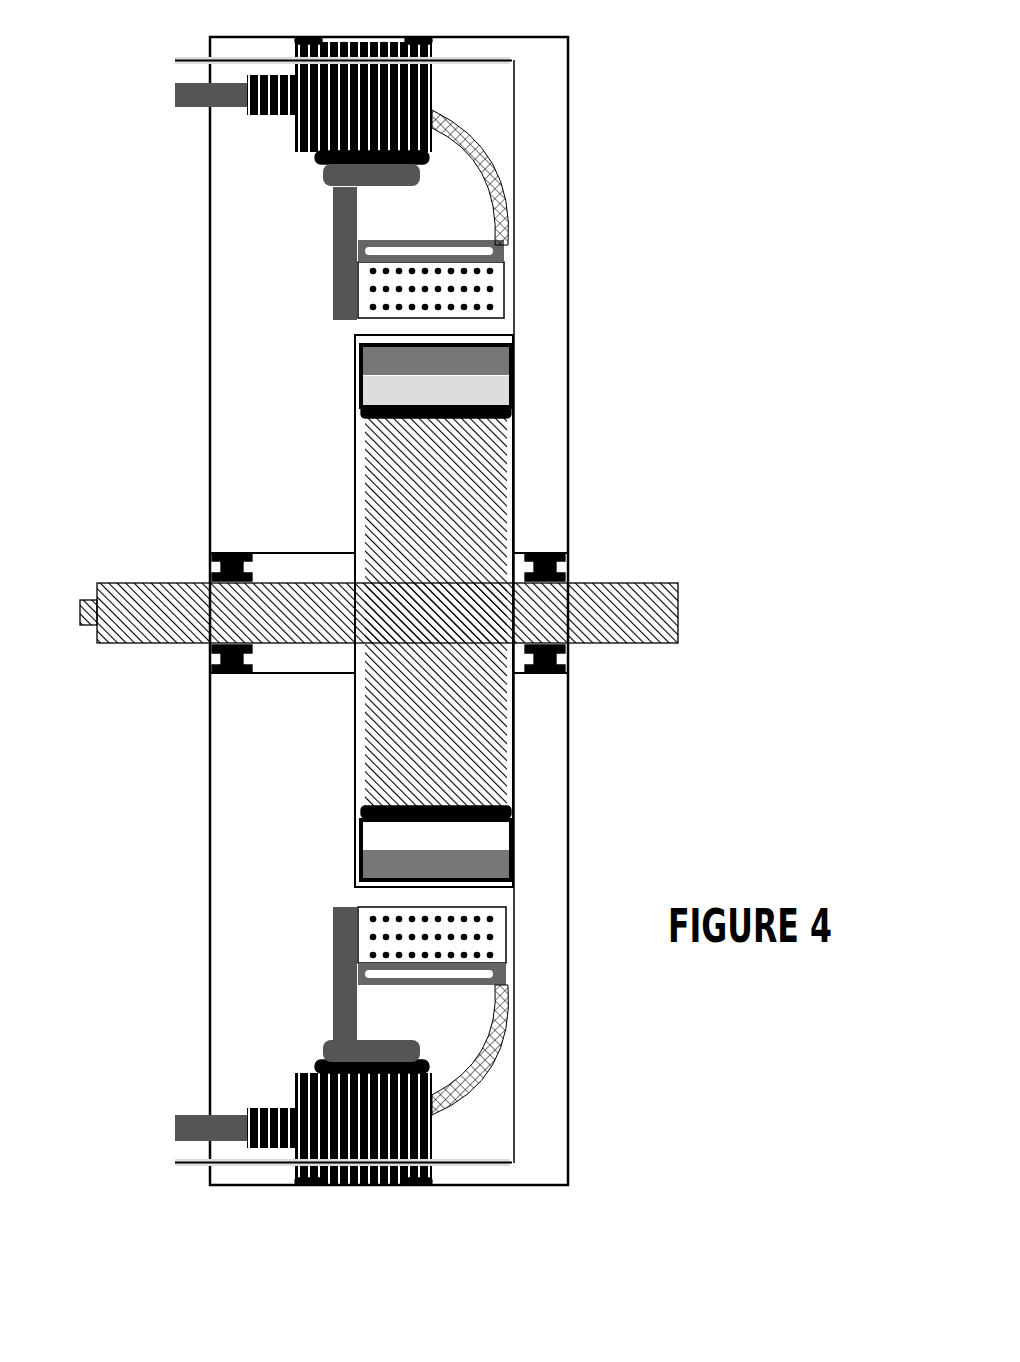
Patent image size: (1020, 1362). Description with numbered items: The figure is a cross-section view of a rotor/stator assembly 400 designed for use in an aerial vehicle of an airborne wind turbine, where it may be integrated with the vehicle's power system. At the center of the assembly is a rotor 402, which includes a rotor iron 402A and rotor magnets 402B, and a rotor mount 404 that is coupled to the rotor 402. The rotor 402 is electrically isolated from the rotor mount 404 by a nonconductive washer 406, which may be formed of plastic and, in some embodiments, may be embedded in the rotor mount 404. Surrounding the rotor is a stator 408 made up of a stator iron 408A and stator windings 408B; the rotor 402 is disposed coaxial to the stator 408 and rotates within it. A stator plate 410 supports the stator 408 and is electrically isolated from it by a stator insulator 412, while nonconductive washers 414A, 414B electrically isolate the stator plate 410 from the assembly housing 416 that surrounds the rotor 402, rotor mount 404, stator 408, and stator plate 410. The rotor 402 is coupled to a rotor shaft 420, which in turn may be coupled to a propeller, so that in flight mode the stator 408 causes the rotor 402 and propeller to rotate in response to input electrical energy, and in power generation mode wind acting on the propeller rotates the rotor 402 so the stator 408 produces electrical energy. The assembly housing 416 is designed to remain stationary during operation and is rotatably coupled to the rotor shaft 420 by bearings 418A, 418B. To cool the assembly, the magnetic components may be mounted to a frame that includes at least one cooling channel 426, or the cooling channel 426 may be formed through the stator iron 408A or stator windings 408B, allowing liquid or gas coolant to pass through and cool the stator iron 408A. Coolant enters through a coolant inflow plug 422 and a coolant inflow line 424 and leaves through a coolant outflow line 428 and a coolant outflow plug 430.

The rotor/stator assembly 400 is at (77, 216).
The rotor 402 is at (361, 366).
The rotor iron 402A is at (436, 390).
The rotor magnets 402B is at (436, 361).
The rotor mount 404 is at (365, 522).
The nonconductive washer 406 is at (361, 418).
The stator 408 is at (333, 298).
The stator iron 408A is at (333, 277).
The stator windings 408B is at (503, 318).
The stator plate 410 is at (432, 80).
The stator insulator 412 is at (428, 158).
The nonconductive washer 414A is at (305, 37).
The nonconductive washer 414B is at (415, 37).
The assembly housing 416 is at (210, 265).
The bearing 418A is at (212, 562).
The bearing 418B is at (566, 578).
The rotor shaft 420 is at (168, 583).
The coolant inflow plug 422 is at (175, 105).
The coolant inflow line 424 is at (480, 243).
The cooling channel 426 is at (397, 250).
The coolant outflow line 428 is at (465, 1052).
The coolant outflow plug 430 is at (180, 1122).